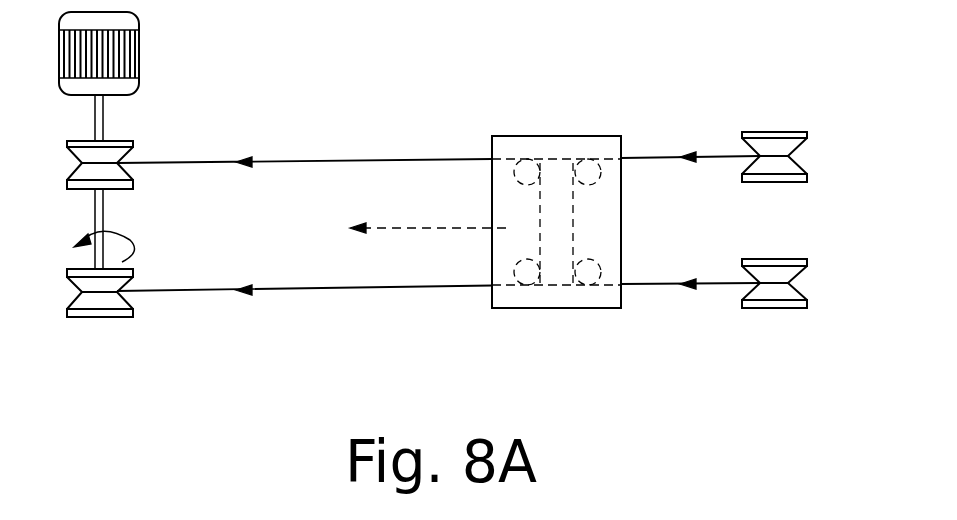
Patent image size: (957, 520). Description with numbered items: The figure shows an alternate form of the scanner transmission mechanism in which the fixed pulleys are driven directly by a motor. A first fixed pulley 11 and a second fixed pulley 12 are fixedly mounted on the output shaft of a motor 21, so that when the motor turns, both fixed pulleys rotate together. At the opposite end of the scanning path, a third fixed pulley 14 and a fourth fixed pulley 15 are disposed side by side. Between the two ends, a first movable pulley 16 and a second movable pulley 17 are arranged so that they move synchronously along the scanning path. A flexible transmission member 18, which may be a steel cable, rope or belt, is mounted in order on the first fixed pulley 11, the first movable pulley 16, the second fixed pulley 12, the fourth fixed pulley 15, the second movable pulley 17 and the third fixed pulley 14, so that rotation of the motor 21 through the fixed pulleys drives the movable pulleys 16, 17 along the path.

The motor 21 is at (118, 27).
The first fixed pulley 11 is at (108, 158).
The second fixed pulley 12 is at (112, 298).
The third fixed pulley 14 is at (768, 147).
The fourth fixed pulley 15 is at (780, 293).
The first movable pulley 16 is at (526, 278).
The second movable pulley 17 is at (590, 280).
The flexible transmission member 18 is at (300, 290).